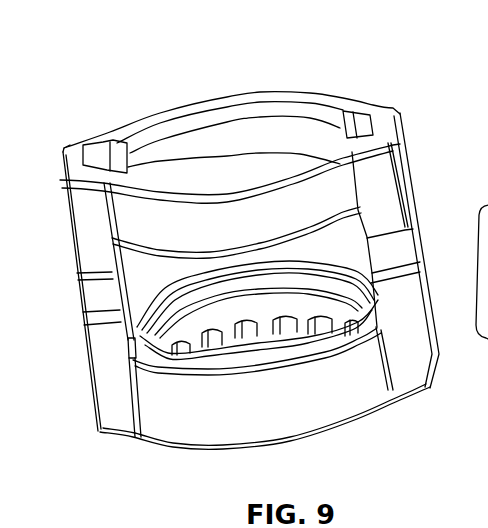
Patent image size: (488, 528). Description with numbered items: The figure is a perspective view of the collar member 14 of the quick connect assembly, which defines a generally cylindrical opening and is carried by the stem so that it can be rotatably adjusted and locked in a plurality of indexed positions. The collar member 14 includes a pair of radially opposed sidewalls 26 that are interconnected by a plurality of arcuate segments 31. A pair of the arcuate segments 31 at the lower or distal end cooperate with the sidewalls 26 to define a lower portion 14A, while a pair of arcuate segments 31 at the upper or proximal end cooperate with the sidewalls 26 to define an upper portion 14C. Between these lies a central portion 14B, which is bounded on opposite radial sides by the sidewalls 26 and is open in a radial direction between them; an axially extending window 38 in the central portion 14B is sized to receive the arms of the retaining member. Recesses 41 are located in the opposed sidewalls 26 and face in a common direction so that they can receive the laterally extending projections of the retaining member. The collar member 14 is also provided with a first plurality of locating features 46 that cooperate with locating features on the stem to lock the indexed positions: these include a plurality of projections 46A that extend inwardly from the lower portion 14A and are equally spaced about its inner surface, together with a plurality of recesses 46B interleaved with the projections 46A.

The collar member 14 is at (113, 46).
The lower portion 14A is at (357, 399).
The central portion 14B is at (398, 228).
The upper portion 14C is at (63, 163).
The sidewalls 26 is at (404, 125).
The arcuate segments 31 is at (299, 107).
The window 38 is at (162, 272).
The recesses 41 is at (400, 258).
The first plurality of locating features 46 is at (243, 337).
The projections 46A is at (268, 316).
The recesses 46B is at (287, 331).